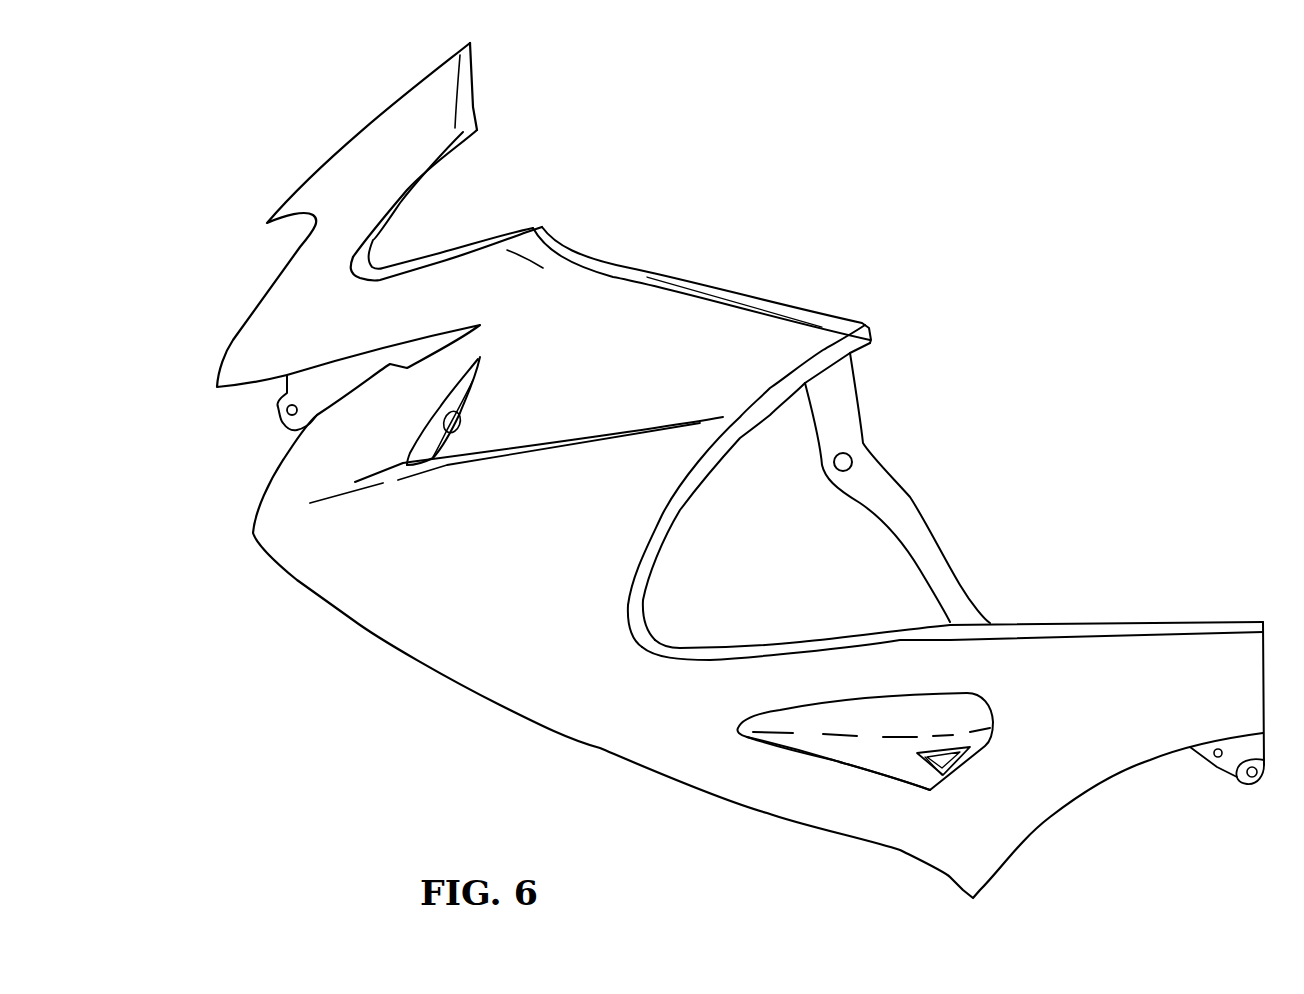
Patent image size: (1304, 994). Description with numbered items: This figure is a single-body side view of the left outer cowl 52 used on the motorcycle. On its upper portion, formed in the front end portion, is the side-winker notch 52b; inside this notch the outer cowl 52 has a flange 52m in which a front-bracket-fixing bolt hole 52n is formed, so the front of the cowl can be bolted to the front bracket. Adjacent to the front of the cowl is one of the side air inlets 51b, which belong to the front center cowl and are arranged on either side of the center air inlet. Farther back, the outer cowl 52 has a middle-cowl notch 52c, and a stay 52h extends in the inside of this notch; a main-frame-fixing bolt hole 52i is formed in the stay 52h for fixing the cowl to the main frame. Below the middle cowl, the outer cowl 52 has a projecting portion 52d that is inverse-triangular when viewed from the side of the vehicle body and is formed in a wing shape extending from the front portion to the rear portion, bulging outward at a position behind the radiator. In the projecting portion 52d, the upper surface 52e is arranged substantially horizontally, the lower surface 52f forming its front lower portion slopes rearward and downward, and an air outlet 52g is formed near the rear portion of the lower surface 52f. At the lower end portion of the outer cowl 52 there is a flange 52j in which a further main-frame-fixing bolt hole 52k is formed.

The outer cowl 52 is at (722, 289).
The side-winker notch 52b is at (440, 163).
The middle-cowl notch 52c is at (748, 430).
The projecting portion 52d is at (940, 733).
The upper surface 52e is at (863, 713).
The lower surface 52f is at (813, 750).
The air outlet 52g is at (950, 763).
The stay 52h is at (910, 482).
The main-frame-fixing bolt hole 52i is at (851, 456).
The flange 52j is at (1213, 770).
The main-frame-fixing bolt hole 52k is at (1237, 782).
The flange 52m is at (283, 390).
The front-bracket-fixing bolt hole 52n is at (277, 418).
The side air inlet 51b is at (461, 429).